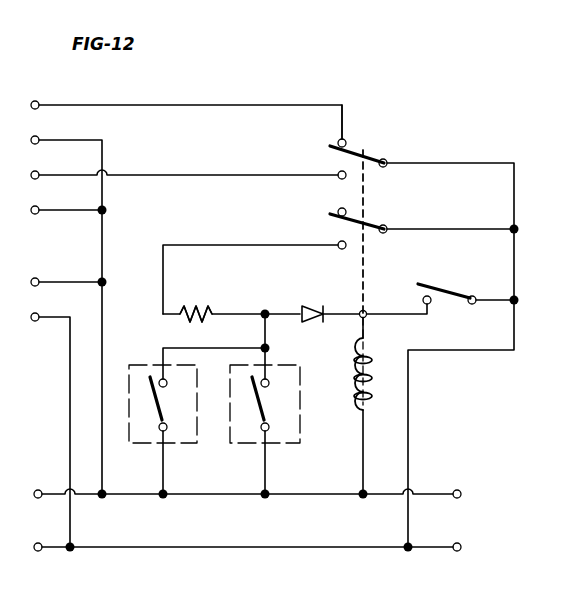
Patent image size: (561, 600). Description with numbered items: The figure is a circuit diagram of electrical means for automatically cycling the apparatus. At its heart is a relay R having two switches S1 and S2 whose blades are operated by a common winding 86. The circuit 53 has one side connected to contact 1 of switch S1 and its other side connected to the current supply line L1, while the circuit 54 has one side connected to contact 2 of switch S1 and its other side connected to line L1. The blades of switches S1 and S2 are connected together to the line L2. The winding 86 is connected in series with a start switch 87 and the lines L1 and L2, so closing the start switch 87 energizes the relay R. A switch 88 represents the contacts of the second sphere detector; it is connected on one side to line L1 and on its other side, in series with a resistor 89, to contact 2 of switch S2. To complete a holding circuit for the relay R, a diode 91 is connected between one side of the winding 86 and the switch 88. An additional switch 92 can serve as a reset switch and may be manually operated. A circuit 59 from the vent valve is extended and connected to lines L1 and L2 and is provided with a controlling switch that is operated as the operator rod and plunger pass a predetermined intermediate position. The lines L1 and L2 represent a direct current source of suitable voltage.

The circuit 53 is at (48, 122).
The circuit 54 is at (48, 192).
The circuit 59 is at (46, 299).
The contact 1 is at (350, 142).
The contact 2 is at (338, 180).
The switch S1 is at (338, 160).
The switch S2 is at (338, 230).
The relay R is at (366, 205).
The start switch 87 is at (436, 312).
The resistor 89 is at (205, 288).
The diode 91 is at (308, 302).
The winding 86 is at (350, 382).
The switch 88 is at (177, 440).
The reset switch 92 is at (285, 442).
The current supply line L1 is at (462, 490).
The line L2 is at (465, 546).